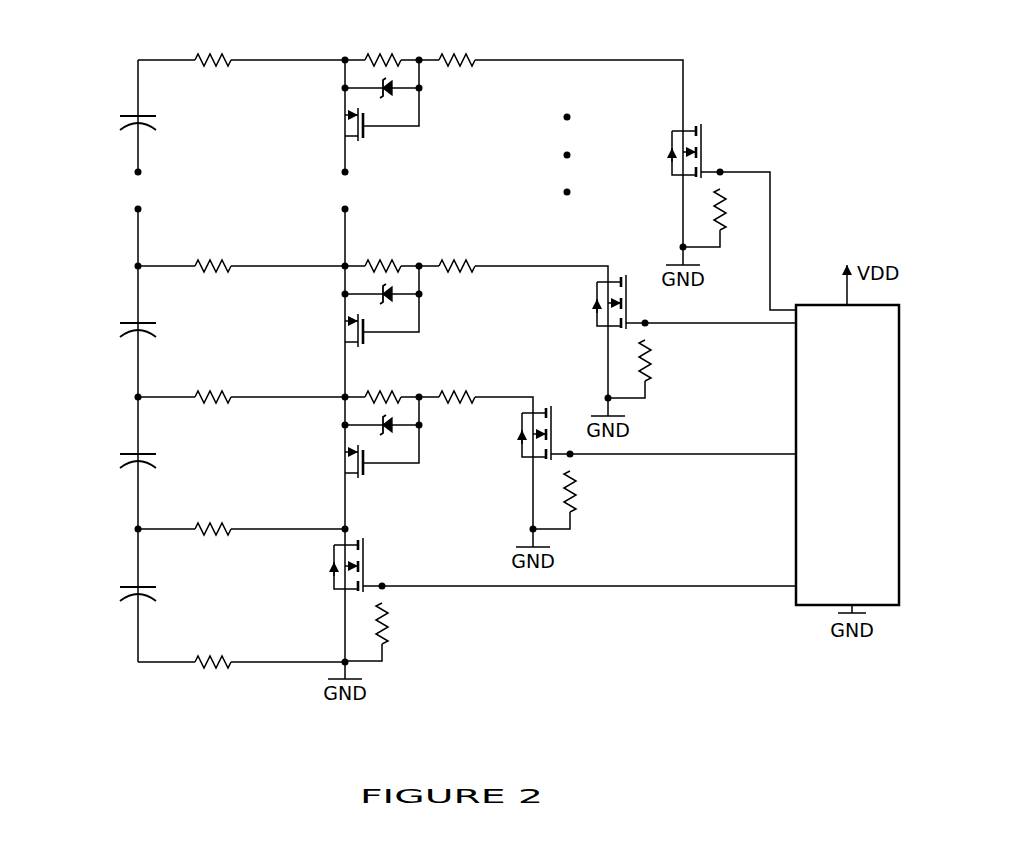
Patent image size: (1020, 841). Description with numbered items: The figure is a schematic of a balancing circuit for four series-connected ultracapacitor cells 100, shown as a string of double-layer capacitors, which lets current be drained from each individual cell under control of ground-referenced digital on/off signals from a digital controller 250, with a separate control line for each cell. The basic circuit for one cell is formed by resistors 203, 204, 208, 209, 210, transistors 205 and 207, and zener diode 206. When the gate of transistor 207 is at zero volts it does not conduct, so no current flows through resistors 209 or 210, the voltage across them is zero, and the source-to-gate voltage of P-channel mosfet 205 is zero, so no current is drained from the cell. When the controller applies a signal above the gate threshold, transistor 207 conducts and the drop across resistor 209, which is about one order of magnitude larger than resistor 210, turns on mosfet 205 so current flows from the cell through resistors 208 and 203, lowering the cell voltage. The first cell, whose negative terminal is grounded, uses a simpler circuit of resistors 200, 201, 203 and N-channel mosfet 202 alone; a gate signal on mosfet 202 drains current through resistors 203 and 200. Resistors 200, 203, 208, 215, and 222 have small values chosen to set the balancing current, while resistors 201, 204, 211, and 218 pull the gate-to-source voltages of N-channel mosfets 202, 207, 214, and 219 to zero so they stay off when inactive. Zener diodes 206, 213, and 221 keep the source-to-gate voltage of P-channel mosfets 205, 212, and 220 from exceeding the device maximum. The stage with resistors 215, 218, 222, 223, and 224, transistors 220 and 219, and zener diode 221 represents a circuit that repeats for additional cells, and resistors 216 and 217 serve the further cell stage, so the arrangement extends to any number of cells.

The ultracapacitor cell (DLC) 100 is at (112, 371).
The resistor 200 is at (184, 682).
The resistor 201 is at (409, 634).
The N-channel mosfet 202 is at (319, 579).
The resistor 203 is at (242, 551).
The resistor 204 is at (598, 504).
The P-channel mosfet 205 is at (341, 448).
The zener diode 206 is at (382, 439).
The N-channel mosfet 207 is at (508, 452).
The resistor 208 is at (240, 417).
The resistor 209 is at (407, 376).
The resistor 210 is at (486, 375).
The resistor 211 is at (672, 374).
The P-channel mosfet 212 is at (339, 319).
The zener diode 213 is at (382, 308).
The N-channel mosfet 214 is at (579, 309).
The resistor 215 is at (243, 286).
The resistor 216 is at (414, 245).
The resistor 217 is at (486, 245).
The resistor 218 is at (725, 242).
The N-channel mosfet 219 is at (660, 170).
The P-channel mosfet 220 is at (337, 115).
The zener diode 221 is at (382, 101).
The resistor 222 is at (243, 80).
The resistor 223 is at (407, 36).
The resistor 224 is at (486, 36).
The digital controller 250 is at (814, 478).